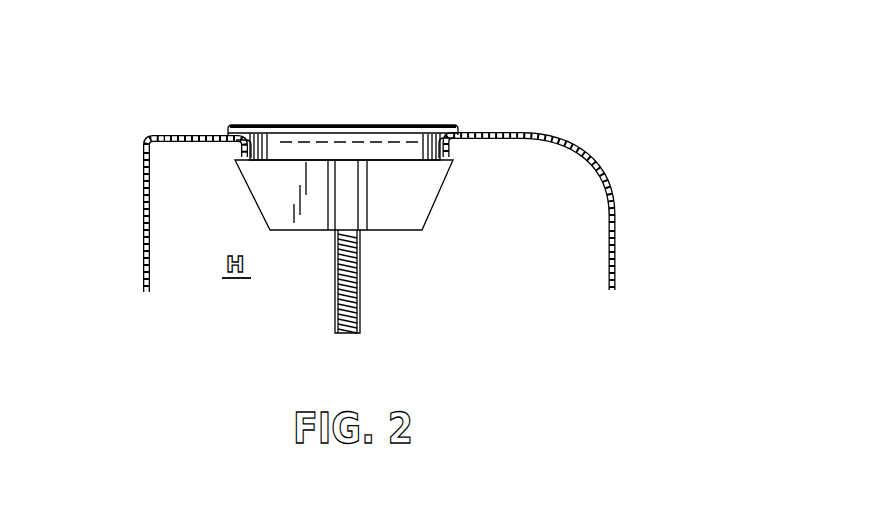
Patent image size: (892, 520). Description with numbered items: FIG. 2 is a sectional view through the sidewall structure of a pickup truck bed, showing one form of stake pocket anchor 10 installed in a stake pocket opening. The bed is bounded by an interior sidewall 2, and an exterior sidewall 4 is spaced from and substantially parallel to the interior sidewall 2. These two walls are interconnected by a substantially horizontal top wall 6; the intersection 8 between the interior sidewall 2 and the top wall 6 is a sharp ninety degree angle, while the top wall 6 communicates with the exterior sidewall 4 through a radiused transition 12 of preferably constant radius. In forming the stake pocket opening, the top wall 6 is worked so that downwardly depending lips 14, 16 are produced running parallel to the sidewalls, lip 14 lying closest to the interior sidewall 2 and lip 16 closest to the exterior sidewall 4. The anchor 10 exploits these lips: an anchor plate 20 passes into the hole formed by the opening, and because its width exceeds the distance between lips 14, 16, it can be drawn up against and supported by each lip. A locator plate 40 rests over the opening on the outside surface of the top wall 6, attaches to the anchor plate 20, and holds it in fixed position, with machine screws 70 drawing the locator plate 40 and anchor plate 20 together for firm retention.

The interior sidewall 2 is at (143, 223).
The exterior sidewall 4 is at (615, 232).
The top wall 6 is at (201, 134).
The intersection 8 is at (146, 135).
The stake pocket anchor 10 is at (549, 101).
The radiused transition 12 is at (572, 152).
The lip 14 is at (243, 148).
The lip 16 is at (447, 147).
The anchor plate 20 is at (417, 232).
The locator plate 40 is at (355, 126).
The machine screws 70 is at (335, 307).